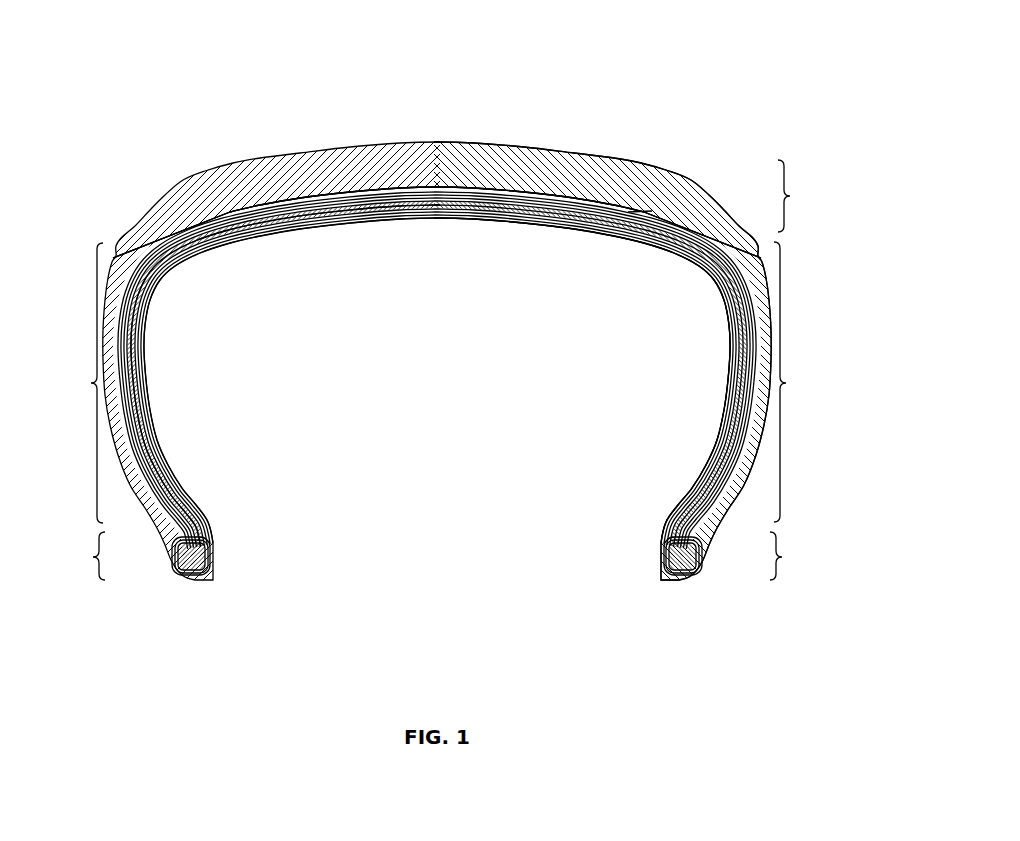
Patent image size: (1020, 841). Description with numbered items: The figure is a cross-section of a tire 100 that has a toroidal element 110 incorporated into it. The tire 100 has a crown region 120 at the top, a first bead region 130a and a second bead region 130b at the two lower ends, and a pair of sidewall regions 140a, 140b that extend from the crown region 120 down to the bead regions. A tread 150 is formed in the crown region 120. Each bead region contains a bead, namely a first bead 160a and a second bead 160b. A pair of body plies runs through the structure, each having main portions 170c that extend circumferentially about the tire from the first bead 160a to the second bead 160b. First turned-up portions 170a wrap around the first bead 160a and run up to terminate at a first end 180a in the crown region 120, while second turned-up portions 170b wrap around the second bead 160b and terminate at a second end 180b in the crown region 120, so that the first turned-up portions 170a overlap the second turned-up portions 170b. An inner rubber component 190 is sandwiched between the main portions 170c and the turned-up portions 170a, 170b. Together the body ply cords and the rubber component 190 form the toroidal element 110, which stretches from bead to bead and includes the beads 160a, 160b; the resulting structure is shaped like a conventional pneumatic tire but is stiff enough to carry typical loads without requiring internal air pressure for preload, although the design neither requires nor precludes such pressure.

The tire 100 is at (137, 50).
The toroidal element 110 is at (738, 244).
The crown region 120 is at (805, 196).
The first bead region 130a is at (801, 556).
The second bead region 130b is at (71, 556).
The sidewall region 140a is at (807, 382).
The sidewall region 140b is at (65, 383).
The tread 150 is at (468, 162).
The first bead 160a is at (682, 560).
The second bead 160b is at (192, 560).
The first turned-up portions 170a is at (574, 202).
The second turned-up portions 170b is at (268, 203).
The main portions 170c is at (233, 233).
The first end 180a is at (314, 196).
The second end 180b is at (562, 197).
The inner rubber component 190 is at (645, 228).